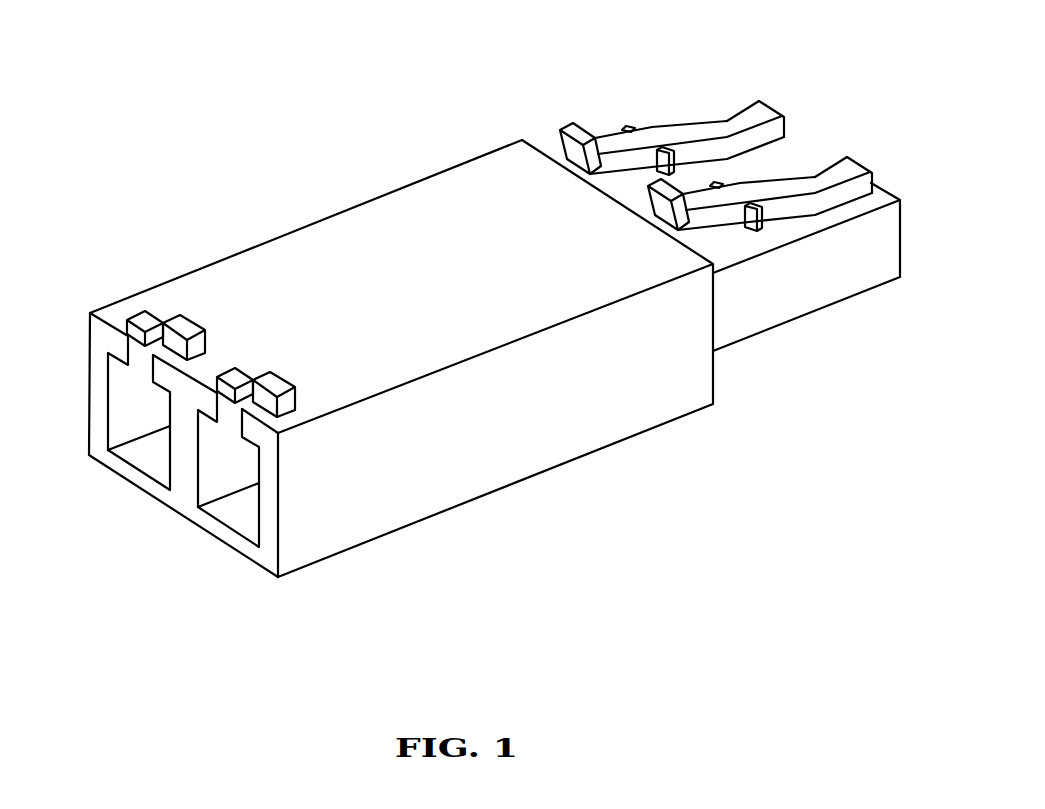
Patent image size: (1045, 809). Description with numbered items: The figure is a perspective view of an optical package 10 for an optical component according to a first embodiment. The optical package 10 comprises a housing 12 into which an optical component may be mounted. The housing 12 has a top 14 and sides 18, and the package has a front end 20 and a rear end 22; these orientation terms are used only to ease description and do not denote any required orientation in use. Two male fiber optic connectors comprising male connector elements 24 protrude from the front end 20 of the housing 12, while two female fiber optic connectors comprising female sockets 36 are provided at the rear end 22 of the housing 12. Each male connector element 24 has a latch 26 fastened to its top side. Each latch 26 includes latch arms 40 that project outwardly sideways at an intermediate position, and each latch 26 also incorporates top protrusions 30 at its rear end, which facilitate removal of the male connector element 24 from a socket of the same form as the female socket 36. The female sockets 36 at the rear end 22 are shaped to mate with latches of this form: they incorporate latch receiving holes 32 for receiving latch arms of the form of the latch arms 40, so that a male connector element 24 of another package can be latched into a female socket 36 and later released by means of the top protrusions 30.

The optical package 10 is at (266, 90).
The housing 12 is at (302, 244).
The top 14 is at (522, 264).
The sides 18 is at (572, 421).
The front end 20 is at (541, 146).
The rear end 22 is at (97, 363).
The male connector elements 24 is at (806, 135).
The latch 26 is at (763, 113).
The top protrusions 30 is at (650, 187).
The latch receiving holes 32 is at (193, 348).
The female sockets 36 is at (108, 405).
The latch arms 40 is at (628, 126).